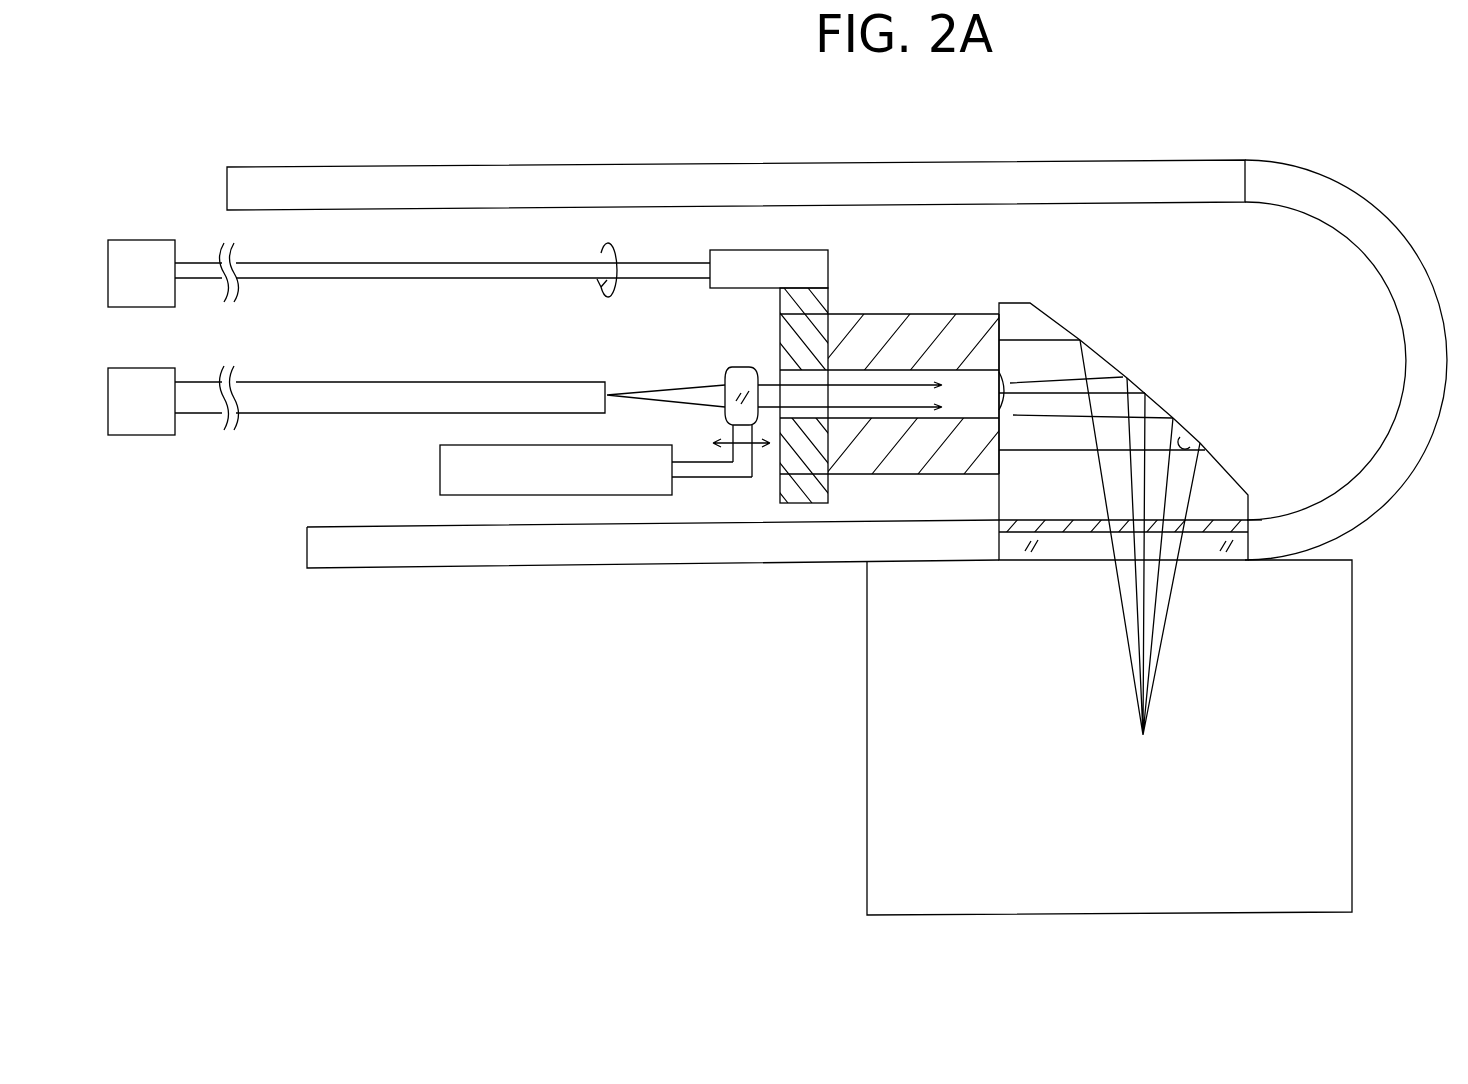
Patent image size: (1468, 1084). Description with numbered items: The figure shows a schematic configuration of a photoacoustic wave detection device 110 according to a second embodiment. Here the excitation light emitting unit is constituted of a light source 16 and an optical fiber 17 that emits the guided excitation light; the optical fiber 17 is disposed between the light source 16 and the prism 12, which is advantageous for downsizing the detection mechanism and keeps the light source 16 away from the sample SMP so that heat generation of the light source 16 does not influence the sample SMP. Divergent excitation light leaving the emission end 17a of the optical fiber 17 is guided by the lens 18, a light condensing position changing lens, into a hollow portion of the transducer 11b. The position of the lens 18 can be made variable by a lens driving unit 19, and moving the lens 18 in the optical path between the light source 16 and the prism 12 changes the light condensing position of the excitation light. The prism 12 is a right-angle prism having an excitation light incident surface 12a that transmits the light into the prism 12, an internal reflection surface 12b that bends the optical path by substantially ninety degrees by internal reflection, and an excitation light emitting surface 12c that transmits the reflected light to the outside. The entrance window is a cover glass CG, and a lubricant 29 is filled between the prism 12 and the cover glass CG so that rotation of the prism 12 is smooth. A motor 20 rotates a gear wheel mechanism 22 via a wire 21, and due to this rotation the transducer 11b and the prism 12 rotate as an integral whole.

The photoacoustic wave detection device 110 is at (1268, 93).
The motor 20 is at (120, 240).
The light source 16 is at (120, 368).
The wire 21 is at (542, 262).
The gear wheel mechanism 22 is at (731, 250).
The transducer 11b is at (866, 313).
The optical fiber 17 is at (545, 382).
The fiber emission end 17a is at (606, 392).
The lens 18 is at (740, 367).
The lens driving unit 19 is at (440, 462).
The prism 12 is at (1067, 321).
The excitation light incident surface 12a is at (1010, 373).
The internal reflection surface 12b is at (1190, 446).
The excitation light emitting surface 12c is at (1222, 521).
The lubricant 29 is at (1272, 519).
The cover glass CG is at (1237, 547).
The sample SMP is at (1352, 737).